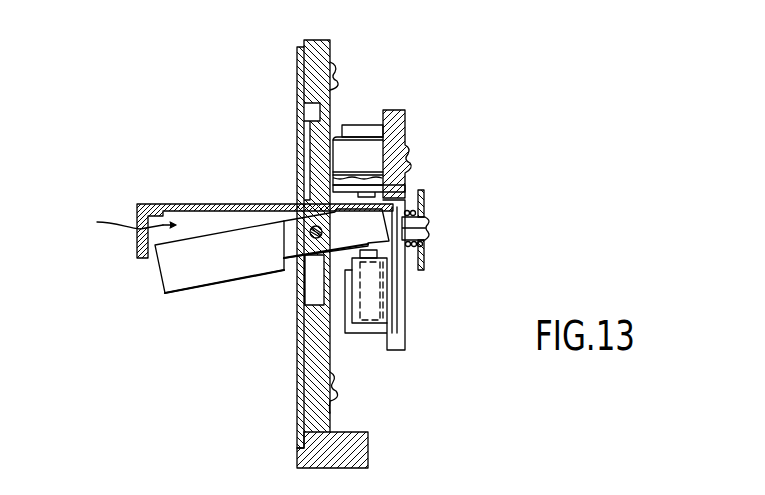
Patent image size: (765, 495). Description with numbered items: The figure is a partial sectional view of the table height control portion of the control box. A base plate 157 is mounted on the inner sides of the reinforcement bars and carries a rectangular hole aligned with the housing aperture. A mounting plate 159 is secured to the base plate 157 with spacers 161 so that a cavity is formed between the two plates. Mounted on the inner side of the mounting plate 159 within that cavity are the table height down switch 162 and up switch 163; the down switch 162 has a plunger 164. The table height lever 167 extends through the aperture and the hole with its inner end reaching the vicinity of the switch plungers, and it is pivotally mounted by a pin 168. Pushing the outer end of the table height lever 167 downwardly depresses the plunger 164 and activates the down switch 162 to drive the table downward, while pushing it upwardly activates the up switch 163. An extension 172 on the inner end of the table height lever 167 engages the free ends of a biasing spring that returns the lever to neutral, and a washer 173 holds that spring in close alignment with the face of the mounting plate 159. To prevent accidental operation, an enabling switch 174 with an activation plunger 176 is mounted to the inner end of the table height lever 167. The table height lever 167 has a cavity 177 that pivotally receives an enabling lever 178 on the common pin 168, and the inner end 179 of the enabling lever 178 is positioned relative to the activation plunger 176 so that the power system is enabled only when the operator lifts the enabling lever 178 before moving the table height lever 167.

The base plate 157 is at (332, 98).
The mounting plate 159 is at (406, 133).
The spacers 161 is at (353, 157).
The table height down switch 162 is at (375, 131).
The table height up switch 163 is at (370, 334).
The plunger 164 is at (410, 192).
The table height lever 167 is at (207, 203).
The pin 168 is at (311, 237).
The extension 172 is at (429, 229).
The washer 173 is at (425, 265).
The enabling switch 174 is at (378, 311).
The activation plunger 176 is at (376, 257).
The cavity 177 is at (114, 224).
The enabling lever 178 is at (183, 271).
The inner end 179 is at (372, 237).